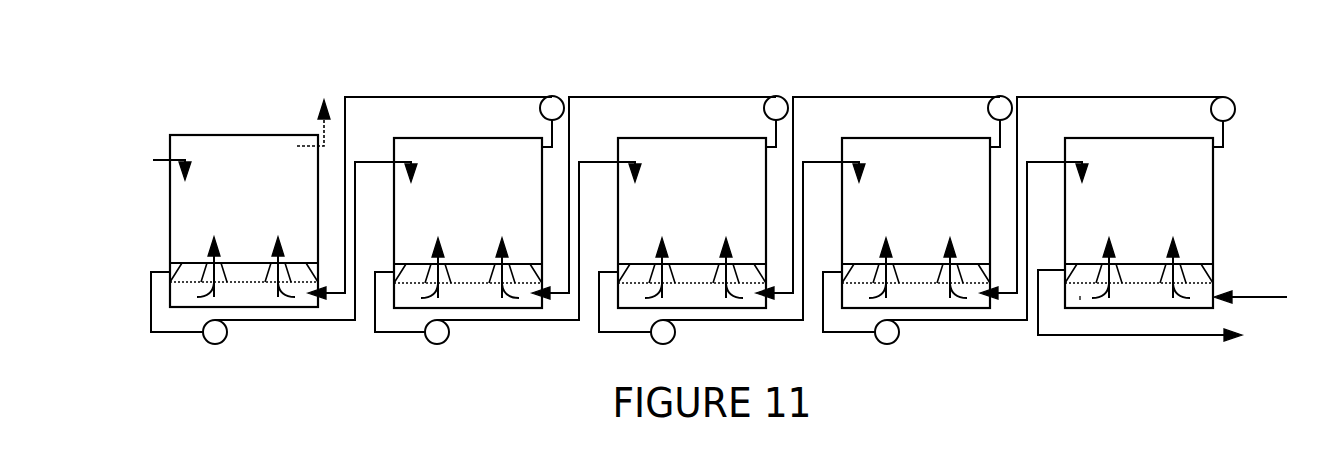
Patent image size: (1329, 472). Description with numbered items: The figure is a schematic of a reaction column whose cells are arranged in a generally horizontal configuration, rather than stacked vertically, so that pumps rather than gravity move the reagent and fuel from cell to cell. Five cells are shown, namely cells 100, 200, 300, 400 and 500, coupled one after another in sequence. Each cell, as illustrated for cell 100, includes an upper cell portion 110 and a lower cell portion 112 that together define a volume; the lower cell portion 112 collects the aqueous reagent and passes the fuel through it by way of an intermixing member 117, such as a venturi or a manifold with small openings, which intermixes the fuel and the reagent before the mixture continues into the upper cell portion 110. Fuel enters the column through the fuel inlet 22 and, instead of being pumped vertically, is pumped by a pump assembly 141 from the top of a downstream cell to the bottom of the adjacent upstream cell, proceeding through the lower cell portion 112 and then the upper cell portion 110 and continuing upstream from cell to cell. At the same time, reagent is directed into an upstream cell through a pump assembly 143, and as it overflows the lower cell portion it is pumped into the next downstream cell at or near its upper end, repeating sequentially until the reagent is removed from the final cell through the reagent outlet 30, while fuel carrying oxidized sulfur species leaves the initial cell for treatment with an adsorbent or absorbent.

The cell 500 is at (242, 108).
The cell 400 is at (447, 73).
The cell 300 is at (672, 73).
The cell 200 is at (895, 73).
The cell 100 is at (1133, 206).
The pump assembly 141 is at (1195, 97).
The upper cell portion 110 is at (1201, 192).
The lower cell portion 112 is at (1193, 270).
The intermixing member 117 is at (1082, 300).
The reagent outlet 30 is at (1183, 337).
The fuel inlet 22 is at (1258, 298).
The pump assembly 143 is at (957, 338).